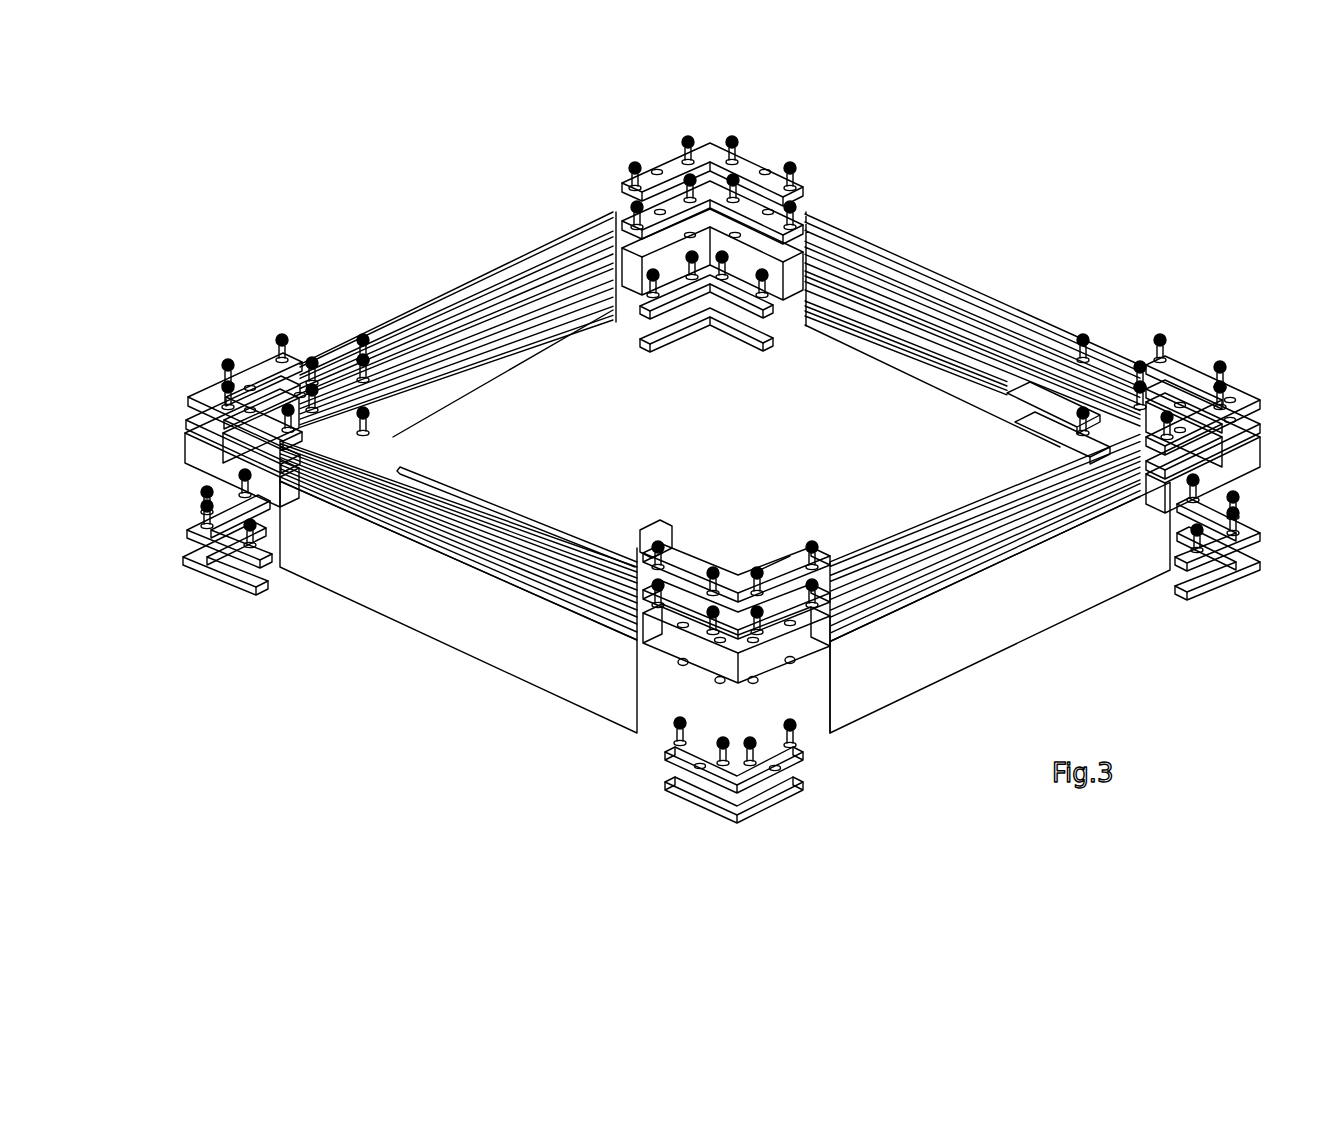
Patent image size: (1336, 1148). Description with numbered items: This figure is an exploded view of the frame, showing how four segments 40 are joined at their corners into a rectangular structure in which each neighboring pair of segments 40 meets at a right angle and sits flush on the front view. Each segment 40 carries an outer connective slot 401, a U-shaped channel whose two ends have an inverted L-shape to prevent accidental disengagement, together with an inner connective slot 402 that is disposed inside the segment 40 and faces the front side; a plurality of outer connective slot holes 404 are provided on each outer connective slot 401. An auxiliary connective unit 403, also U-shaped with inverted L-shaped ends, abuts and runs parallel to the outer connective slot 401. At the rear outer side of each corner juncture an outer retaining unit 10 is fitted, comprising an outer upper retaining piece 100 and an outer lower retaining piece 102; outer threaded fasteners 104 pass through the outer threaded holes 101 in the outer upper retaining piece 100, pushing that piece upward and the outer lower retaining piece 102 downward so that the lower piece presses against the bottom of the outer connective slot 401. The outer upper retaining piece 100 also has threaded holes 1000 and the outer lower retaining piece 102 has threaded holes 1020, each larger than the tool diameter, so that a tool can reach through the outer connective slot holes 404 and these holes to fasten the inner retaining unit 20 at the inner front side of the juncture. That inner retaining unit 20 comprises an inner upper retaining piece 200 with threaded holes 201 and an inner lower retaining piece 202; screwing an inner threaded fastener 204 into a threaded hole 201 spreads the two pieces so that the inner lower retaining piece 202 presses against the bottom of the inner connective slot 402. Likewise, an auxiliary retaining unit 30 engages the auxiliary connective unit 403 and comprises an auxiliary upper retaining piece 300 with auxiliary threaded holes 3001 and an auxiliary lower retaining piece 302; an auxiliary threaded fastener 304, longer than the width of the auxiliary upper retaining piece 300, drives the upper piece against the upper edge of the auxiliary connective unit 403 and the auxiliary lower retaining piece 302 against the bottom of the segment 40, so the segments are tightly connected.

The outer retaining unit 10 is at (681, 463).
The outer upper retaining piece 100 is at (706, 471).
The outer threaded hole 101 is at (264, 348).
The outer lower retaining piece 102 is at (212, 420).
The outer threaded fastener 104 is at (292, 338).
The threaded hole 1000 is at (670, 660).
The threaded hole 1020 is at (705, 682).
The inner retaining unit 20 is at (779, 554).
The inner upper retaining piece 200 is at (820, 772).
The threaded hole 201 is at (668, 784).
The inner lower retaining piece 202 is at (800, 802).
The inner threaded fastener 204 is at (730, 772).
The auxiliary retaining unit 30 is at (935, 479).
The auxiliary upper retaining piece 300 is at (1048, 450).
The auxiliary lower retaining piece 302 is at (1022, 418).
The auxiliary threaded hole 3001 is at (822, 552).
The auxiliary threaded fastener 304 is at (660, 540).
The segment 40 is at (440, 625).
The outer connective slot 401 is at (472, 300).
The inner connective slot 402 is at (240, 470).
The auxiliary connective unit 403 is at (398, 408).
The outer connective slot hole 404 is at (888, 262).